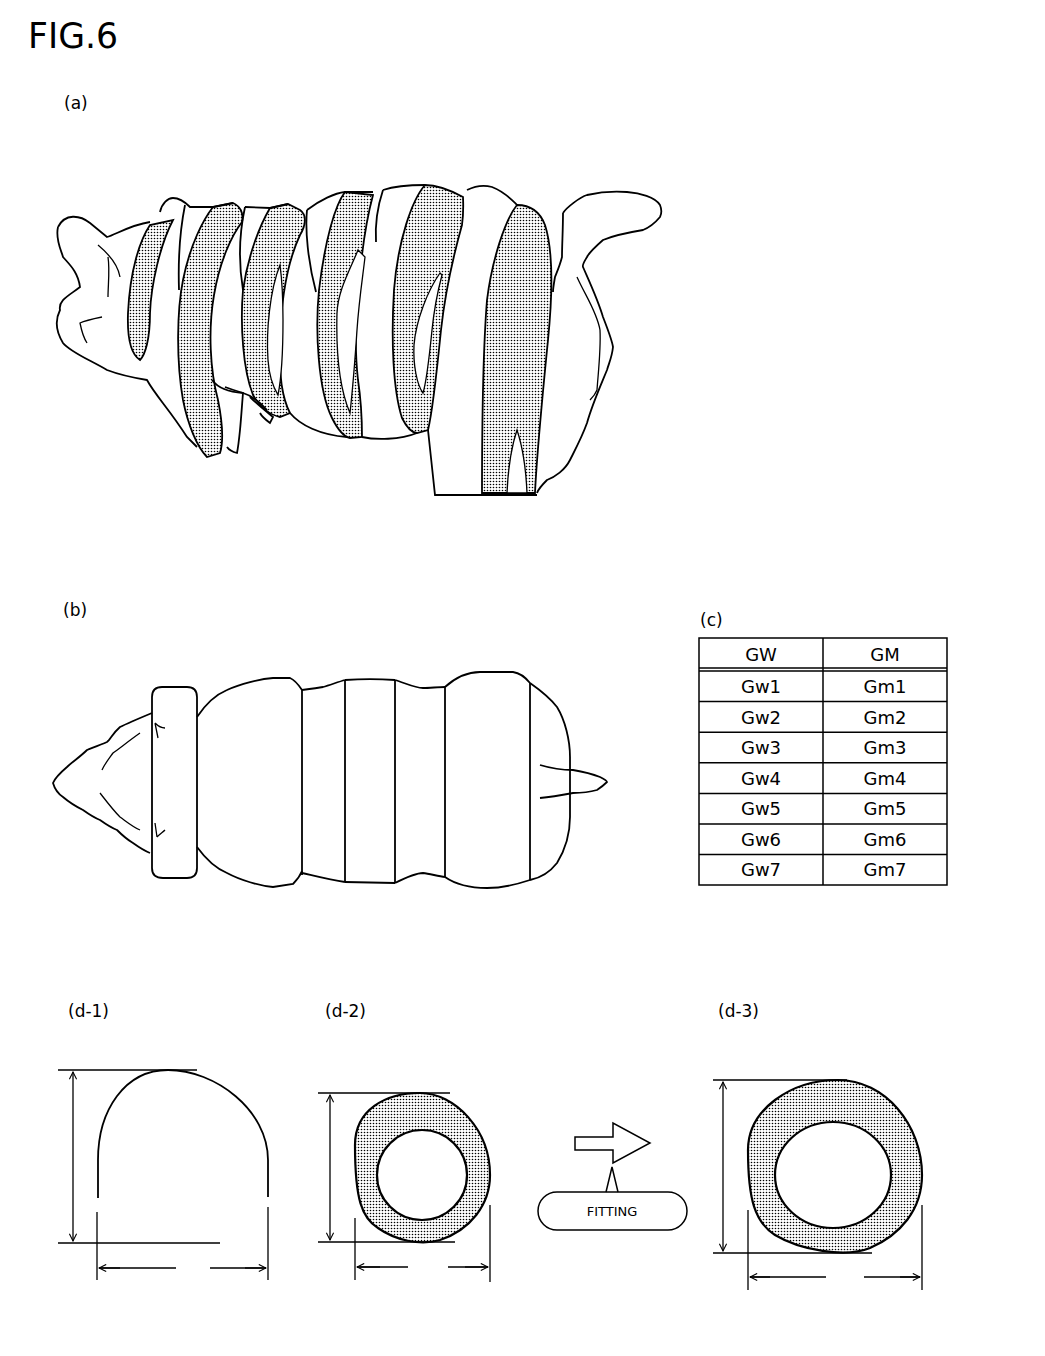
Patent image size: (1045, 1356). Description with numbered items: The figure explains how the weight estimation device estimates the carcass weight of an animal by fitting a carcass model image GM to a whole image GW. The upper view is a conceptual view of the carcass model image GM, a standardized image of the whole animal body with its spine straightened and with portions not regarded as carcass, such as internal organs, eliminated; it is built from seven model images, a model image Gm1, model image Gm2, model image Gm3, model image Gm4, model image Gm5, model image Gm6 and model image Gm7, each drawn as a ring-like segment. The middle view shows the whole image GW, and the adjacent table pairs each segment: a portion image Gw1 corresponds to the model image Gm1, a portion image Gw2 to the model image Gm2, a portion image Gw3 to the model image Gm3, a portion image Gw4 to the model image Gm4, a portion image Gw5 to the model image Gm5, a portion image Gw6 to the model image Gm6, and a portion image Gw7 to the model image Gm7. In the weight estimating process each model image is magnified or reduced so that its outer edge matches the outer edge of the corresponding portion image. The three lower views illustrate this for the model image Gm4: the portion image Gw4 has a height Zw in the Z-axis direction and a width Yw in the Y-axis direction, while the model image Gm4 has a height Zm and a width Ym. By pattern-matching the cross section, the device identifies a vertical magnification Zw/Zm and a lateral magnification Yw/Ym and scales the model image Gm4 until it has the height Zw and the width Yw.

The carcass model image GM is at (656, 169).
The model image Gm1 is at (130, 223).
The model image Gm2 is at (212, 205).
The model image Gm3 is at (272, 203).
The model image Gm4 is at (342, 193).
The model image Gm5 is at (413, 183).
The model image Gm6 is at (518, 197).
The model image Gm7 is at (587, 198).
The whole image GW is at (590, 716).
The portion image Gw1 is at (162, 687).
The portion image Gw2 is at (247, 680).
The portion image Gw3 is at (325, 687).
The portion image Gw4 is at (373, 677).
The portion image Gw5 is at (423, 685).
The portion image Gw6 is at (483, 672).
The portion image Gw7 is at (540, 685).
The height of the portion image Zw is at (465, 1161).
The width of the portion image Yw is at (509, 1249).
The height of the model image Zm is at (385, 1167).
The width of the model image Ym is at (422, 1244).